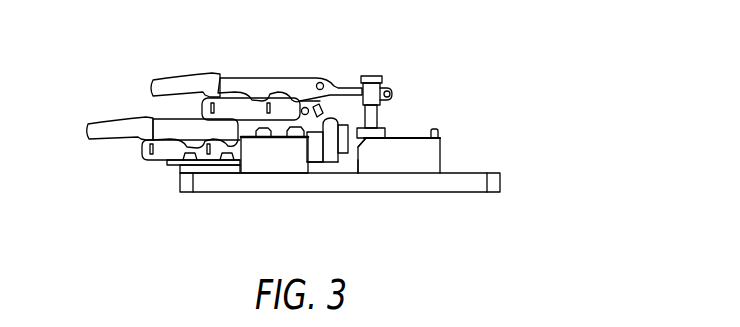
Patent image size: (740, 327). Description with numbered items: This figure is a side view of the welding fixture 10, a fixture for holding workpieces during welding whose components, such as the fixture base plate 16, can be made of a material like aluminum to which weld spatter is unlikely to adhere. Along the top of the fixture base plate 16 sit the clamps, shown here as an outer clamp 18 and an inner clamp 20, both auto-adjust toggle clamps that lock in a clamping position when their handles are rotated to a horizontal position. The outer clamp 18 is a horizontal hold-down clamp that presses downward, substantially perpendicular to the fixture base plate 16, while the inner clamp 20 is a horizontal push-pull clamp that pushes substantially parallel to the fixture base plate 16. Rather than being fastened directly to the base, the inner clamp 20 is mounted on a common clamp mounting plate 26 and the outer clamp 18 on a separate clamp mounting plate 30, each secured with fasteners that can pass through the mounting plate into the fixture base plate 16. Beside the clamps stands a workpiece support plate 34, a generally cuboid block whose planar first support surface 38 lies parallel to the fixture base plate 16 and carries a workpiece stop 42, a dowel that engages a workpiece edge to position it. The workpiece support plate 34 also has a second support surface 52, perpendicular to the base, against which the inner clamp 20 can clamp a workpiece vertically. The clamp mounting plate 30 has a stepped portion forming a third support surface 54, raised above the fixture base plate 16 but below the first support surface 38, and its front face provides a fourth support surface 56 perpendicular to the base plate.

The welding fixture 10 is at (566, 99).
The fixture base plate 16 is at (473, 192).
The outer clamp 18 is at (229, 78).
The inner clamp 20 is at (97, 139).
The common clamp mounting plate 26 is at (177, 169).
The clamp mounting plate 30 is at (240, 165).
The workpiece support plate 34 is at (440, 160).
The first support surface 38 is at (403, 137).
The workpiece stop 42 is at (437, 130).
The second support surface 52 is at (358, 165).
The third support surface 54 is at (308, 167).
The fourth support surface 56 is at (335, 167).